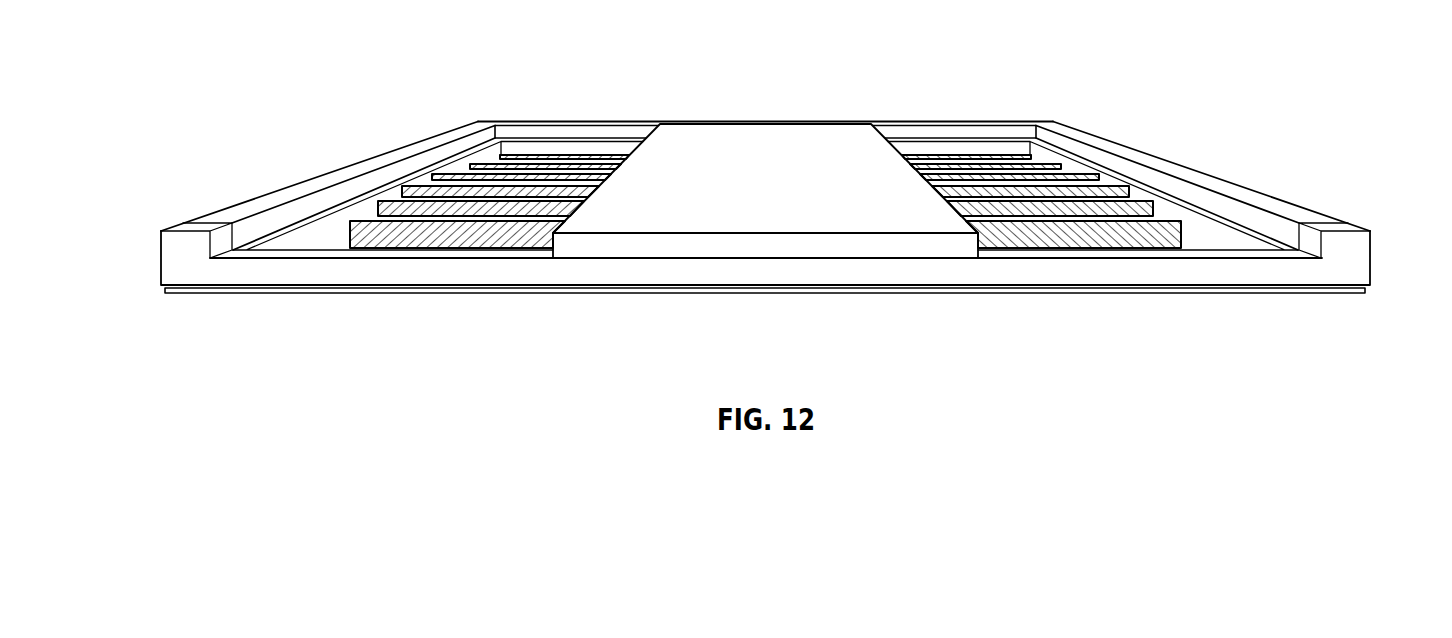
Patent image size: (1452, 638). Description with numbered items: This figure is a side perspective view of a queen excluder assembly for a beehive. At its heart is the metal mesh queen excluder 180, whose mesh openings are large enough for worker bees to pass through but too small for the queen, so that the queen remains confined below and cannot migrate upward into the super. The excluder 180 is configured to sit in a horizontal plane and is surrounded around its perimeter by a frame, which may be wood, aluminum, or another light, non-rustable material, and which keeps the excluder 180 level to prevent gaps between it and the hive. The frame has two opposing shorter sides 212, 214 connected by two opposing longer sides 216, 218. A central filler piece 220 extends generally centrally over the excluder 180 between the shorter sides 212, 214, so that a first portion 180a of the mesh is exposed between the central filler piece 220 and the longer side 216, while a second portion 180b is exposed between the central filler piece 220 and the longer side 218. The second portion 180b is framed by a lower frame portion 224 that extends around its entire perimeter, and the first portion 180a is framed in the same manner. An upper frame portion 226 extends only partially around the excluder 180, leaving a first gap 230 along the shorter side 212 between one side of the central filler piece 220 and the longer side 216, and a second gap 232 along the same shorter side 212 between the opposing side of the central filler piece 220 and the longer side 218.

The queen excluder 180 is at (747, 181).
The first portion of queen excluder 180a is at (463, 180).
The second portion of queen excluder 180b is at (1068, 198).
The shorter side 212 is at (347, 276).
The shorter side 214 is at (590, 138).
The longer side 216 is at (253, 207).
The longer side 218 is at (1277, 208).
The central filler piece 220 is at (758, 140).
The lower frame portion 224 is at (1184, 208).
The upper frame portion 226 is at (1338, 227).
The first gap 230 is at (467, 252).
The second gap 232 is at (1127, 253).